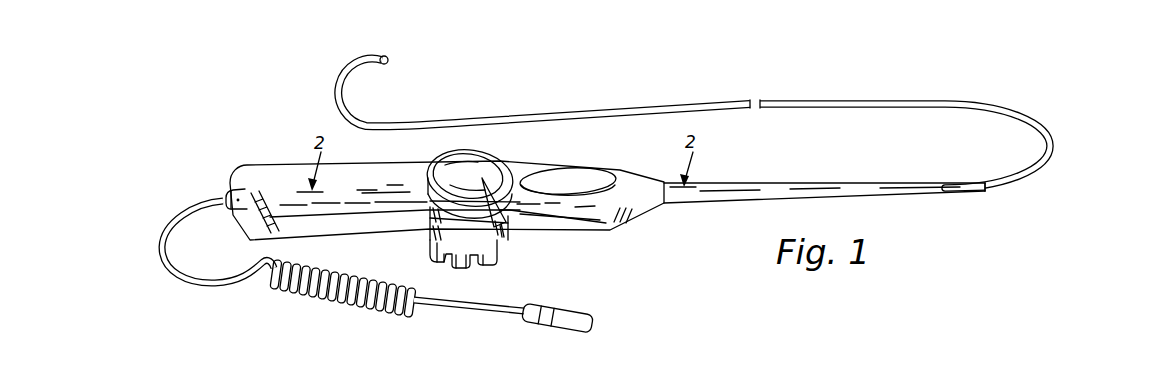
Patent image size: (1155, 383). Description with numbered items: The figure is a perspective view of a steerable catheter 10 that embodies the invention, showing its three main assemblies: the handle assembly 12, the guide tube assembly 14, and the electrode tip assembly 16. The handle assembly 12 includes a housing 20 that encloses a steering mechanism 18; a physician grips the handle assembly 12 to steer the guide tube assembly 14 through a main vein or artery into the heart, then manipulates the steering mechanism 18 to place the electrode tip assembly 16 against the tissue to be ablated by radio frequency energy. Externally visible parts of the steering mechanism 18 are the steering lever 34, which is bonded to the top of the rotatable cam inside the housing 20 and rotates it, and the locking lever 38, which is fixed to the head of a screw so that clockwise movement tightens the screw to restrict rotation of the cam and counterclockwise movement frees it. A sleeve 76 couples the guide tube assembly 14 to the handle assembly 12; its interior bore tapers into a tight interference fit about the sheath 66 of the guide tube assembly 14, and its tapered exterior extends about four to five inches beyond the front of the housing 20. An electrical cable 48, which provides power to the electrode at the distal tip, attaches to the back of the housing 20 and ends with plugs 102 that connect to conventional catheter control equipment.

The steerable catheter 10 is at (933, 212).
The handle assembly 12 is at (270, 140).
The guide tube assembly 14 is at (918, 88).
The electrode tip assembly 16 is at (402, 58).
The steering mechanism 18 is at (423, 156).
The housing 20 is at (245, 166).
The steering lever 34 is at (500, 235).
The locking lever 38 is at (492, 264).
The electrical cable 48 is at (206, 283).
The sheath 66 is at (1053, 140).
The sleeve 76 is at (910, 183).
The plugs 102 is at (568, 308).